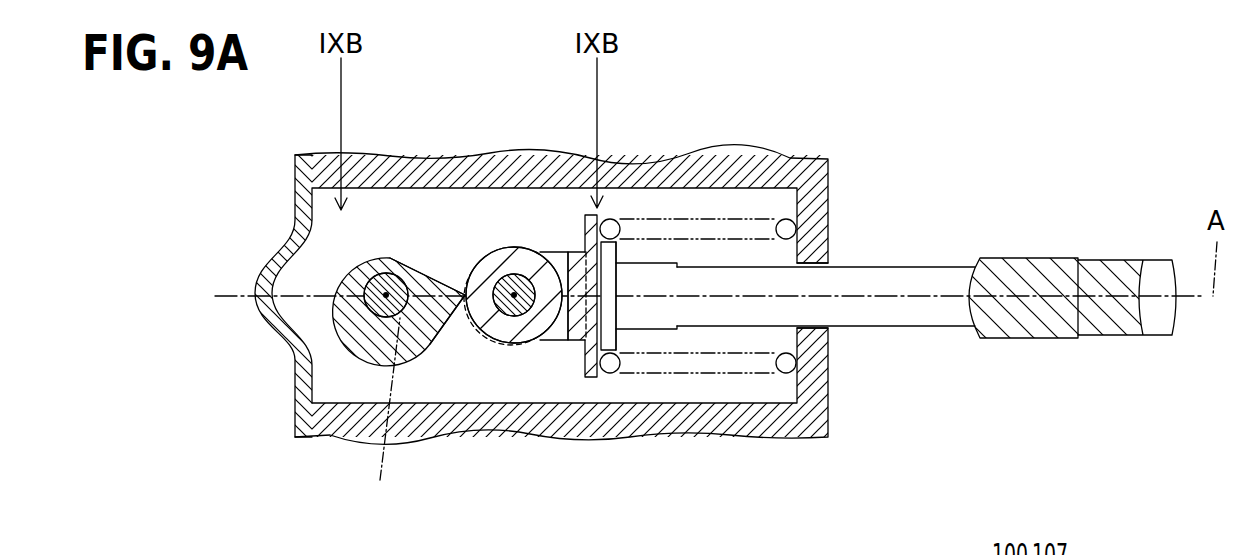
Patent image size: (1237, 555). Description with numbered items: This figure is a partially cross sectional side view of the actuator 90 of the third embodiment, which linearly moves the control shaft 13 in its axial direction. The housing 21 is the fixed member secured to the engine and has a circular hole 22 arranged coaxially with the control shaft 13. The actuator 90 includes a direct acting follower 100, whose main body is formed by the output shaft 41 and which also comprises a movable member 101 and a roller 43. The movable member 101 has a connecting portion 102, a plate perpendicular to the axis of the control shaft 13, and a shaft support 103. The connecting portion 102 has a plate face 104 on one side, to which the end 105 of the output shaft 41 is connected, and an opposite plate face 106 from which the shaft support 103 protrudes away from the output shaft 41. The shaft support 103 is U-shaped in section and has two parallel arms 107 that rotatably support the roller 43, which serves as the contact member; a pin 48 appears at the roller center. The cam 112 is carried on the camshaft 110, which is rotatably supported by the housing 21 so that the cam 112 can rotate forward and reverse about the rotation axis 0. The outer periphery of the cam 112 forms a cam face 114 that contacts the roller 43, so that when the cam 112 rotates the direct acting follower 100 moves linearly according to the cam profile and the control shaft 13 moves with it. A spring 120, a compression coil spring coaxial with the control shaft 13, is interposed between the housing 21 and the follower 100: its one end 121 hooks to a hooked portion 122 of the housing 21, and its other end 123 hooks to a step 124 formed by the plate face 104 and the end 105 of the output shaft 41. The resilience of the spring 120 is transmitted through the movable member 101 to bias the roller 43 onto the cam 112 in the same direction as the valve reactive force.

The actuator 90 is at (832, 151).
The housing 21 is at (352, 423).
The circular hole 22 is at (828, 318).
The camshaft 110 is at (362, 310).
The cam 112 is at (385, 260).
The cam face 114 is at (400, 317).
The rotation axis 0 is at (390, 416).
The arms 107 is at (485, 247).
The direct acting follower 100 is at (480, 335).
The roller 43 is at (552, 272).
The roller pin 48 is at (515, 309).
The movable member 101 is at (510, 500).
The shaft support 103 is at (560, 332).
The connecting portion 102 is at (580, 346).
The plate face 106 is at (585, 232).
The step 124 is at (618, 278).
The end of output shaft 105 is at (650, 262).
The spring 120 is at (719, 368).
The one end of spring 121 is at (786, 219).
The hooked portion 122 is at (786, 373).
The other end of spring 123 is at (614, 356).
The plate face 104 is at (618, 330).
The output shaft 41 is at (872, 275).
The control shaft 13 is at (1150, 272).